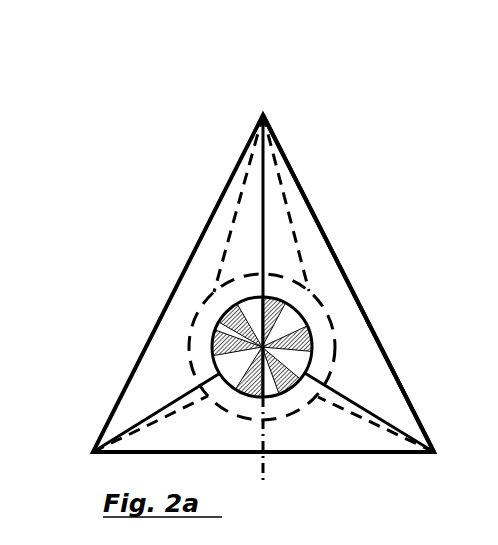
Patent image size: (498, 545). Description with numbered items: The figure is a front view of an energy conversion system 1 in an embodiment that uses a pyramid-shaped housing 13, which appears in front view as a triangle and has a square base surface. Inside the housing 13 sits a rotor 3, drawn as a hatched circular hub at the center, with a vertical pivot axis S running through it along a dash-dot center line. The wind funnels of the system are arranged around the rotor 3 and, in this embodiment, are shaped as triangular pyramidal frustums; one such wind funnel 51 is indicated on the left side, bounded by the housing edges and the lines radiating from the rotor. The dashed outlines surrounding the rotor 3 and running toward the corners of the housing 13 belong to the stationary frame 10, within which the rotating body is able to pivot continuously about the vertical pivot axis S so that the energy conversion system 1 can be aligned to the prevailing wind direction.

The energy conversion system 1 is at (124, 82).
The rotor 3 is at (303, 387).
The stationary frame 10 is at (360, 403).
The pyramid-shaped housing 13 is at (352, 287).
The wind funnel 51 is at (168, 354).
The vertical pivot axis S is at (265, 478).